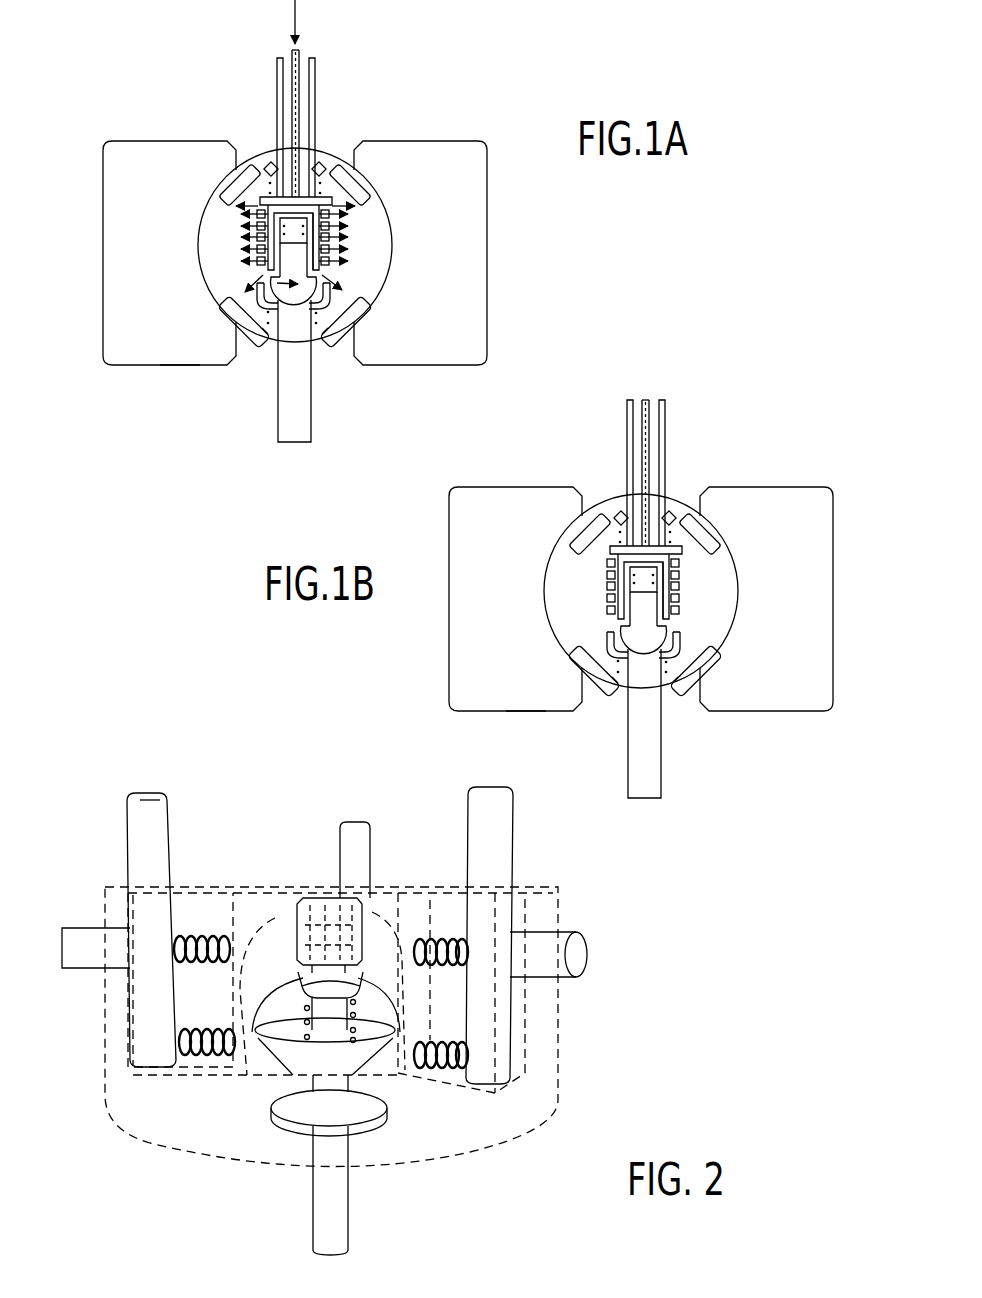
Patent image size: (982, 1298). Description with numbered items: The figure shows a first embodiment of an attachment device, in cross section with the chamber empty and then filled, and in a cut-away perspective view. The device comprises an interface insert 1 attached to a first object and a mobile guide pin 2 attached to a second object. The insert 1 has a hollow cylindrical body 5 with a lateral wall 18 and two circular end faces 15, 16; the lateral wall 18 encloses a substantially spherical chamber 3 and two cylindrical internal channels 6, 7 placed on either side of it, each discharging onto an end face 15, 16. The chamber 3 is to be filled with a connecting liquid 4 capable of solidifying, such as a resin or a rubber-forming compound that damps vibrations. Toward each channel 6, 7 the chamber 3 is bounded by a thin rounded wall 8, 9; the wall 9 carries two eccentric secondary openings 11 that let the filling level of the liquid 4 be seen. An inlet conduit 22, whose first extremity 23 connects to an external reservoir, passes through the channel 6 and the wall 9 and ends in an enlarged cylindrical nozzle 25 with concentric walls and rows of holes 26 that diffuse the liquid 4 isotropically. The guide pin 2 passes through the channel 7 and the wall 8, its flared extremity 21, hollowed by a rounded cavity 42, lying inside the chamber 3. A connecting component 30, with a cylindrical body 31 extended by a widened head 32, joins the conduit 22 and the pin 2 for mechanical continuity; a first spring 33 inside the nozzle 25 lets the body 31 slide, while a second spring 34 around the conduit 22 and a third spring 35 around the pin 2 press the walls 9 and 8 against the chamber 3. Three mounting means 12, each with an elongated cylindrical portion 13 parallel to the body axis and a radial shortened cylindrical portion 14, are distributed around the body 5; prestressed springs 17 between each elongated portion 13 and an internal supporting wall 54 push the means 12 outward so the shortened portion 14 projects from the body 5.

In FIG. 1A, the interface insert 1 is at (130, 140).
In FIG. 1B, the interface insert 1 is at (572, 486).
In FIG. 2, the interface insert 1 is at (597, 928).
In FIG. 1A, the mobile guide pin 2 is at (272, 410).
In FIG. 1B, the mobile guide pin 2 is at (667, 770).
In FIG. 2, the mobile guide pin 2 is at (340, 1215).
In FIG. 1A, the chamber 3 is at (357, 243).
In FIG. 1A, the connecting liquid 4 is at (292, 108).
In FIG. 1B, the connecting liquid 4 is at (702, 590).
In FIG. 1A, the hollow cylindrical body 5 is at (440, 185).
In FIG. 1B, the hollow cylindrical body 5 is at (785, 530).
In FIG. 2, the hollow cylindrical body 5 is at (540, 1043).
In FIG. 1A, the cylindrical internal channel 6 is at (330, 141).
In FIG. 1B, the cylindrical internal channel 6 is at (670, 505).
In FIG. 1A, the cylindrical internal channel 7 is at (330, 352).
In FIG. 1B, the cylindrical internal channel 7 is at (600, 672).
In FIG. 1A, the rounded wall 8 is at (262, 330).
In FIG. 1B, the rounded wall 8 is at (590, 680).
In FIG. 2, the rounded wall 8 is at (315, 1055).
In FIG. 1A, the rounded wall 9 is at (238, 188).
In FIG. 1B, the rounded wall 9 is at (588, 536).
In FIG. 1A, the secondary openings 11 is at (266, 175).
In FIG. 1B, the secondary openings 11 is at (616, 524).
In FIG. 2, the mounting means 12 is at (144, 812).
In FIG. 2, the elongated cylindrical portion 13 is at (135, 830).
In FIG. 2, the shortened cylindrical portion 14 is at (90, 955).
In FIG. 1A, the circular end face 15 is at (168, 365).
In FIG. 1B, the circular end face 15 is at (515, 711).
In FIG. 1A, the circular end face 16 is at (186, 141).
In FIG. 1B, the circular end face 16 is at (500, 487).
In FIG. 2, the prestressed springs 17 is at (187, 935).
In FIG. 1A, the lateral wall 18 is at (458, 253).
In FIG. 1B, the lateral wall 18 is at (803, 603).
In FIG. 1A, the flared extremity 21 is at (325, 300).
In FIG. 1B, the flared extremity 21 is at (676, 648).
In FIG. 2, the flared extremity 21 is at (308, 1040).
In FIG. 1A, the inlet conduit 22 is at (305, 103).
In FIG. 1B, the inlet conduit 22 is at (652, 456).
In FIG. 1A, the first extremity 23 is at (302, 62).
In FIG. 1B, the first extremity 23 is at (665, 415).
In FIG. 1A, the enlarged cylindrical nozzle 25 is at (350, 222).
In FIG. 1B, the enlarged cylindrical nozzle 25 is at (692, 570).
In FIG. 2, the enlarged cylindrical nozzle 25 is at (300, 920).
In FIG. 1A, the holes 26 is at (360, 305).
In FIG. 1B, the holes 26 is at (680, 592).
In FIG. 1A, the connecting component 30 is at (277, 283).
In FIG. 1B, the connecting component 30 is at (642, 633).
In FIG. 2, the connecting component 30 is at (355, 1000).
In FIG. 1A, the cylindrical body 31 is at (283, 240).
In FIG. 1B, the cylindrical body 31 is at (634, 591).
In FIG. 1A, the widened head 32 is at (270, 300).
In FIG. 1B, the widened head 32 is at (632, 652).
In FIG. 1A, the first spring 33 is at (266, 210).
In FIG. 1B, the first spring 33 is at (617, 562).
In FIG. 1A, the second spring 34 is at (322, 190).
In FIG. 1B, the second spring 34 is at (672, 539).
In FIG. 1A, the third spring 35 is at (320, 318).
In FIG. 1B, the third spring 35 is at (666, 665).
In FIG. 1A, the rounded cavity 42 is at (300, 330).
In FIG. 1B, the rounded cavity 42 is at (656, 690).
In FIG. 2, the internal supporting wall 54 is at (230, 920).